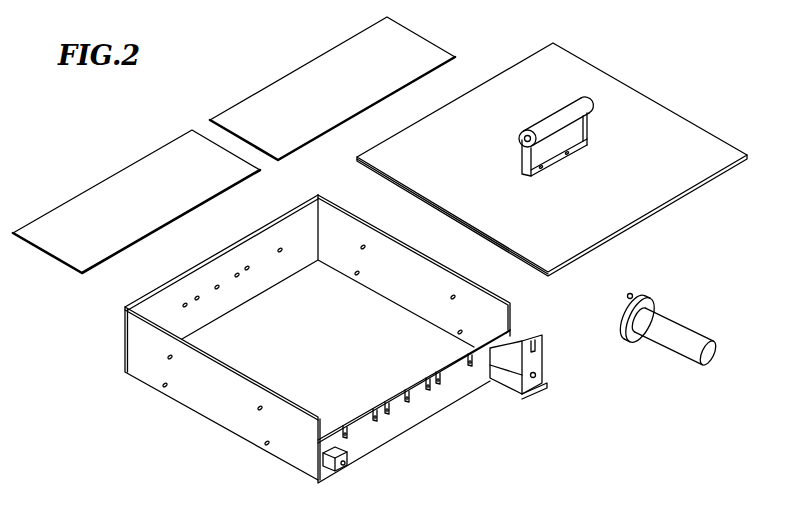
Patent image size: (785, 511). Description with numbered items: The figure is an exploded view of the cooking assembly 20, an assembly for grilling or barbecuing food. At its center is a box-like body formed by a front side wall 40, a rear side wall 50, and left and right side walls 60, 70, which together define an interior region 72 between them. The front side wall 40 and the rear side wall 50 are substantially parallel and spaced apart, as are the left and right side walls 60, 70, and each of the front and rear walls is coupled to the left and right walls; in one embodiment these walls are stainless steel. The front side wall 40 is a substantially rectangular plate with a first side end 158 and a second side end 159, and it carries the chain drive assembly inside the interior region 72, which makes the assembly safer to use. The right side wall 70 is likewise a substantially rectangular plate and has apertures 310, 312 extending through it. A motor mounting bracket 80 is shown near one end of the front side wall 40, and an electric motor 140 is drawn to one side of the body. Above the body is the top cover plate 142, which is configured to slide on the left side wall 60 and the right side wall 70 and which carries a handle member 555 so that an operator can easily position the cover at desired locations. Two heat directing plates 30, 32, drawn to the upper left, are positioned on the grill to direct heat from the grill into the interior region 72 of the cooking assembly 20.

The cooking assembly 20 is at (606, 47).
The heat directing plate 30 is at (117, 205).
The heat directing plate 32 is at (303, 88).
The top cover plate 142 is at (650, 128).
The handle member 555 is at (553, 123).
The front side wall 40 is at (415, 408).
The rear side wall 50 is at (247, 287).
The left side wall 60 is at (232, 413).
The right side wall 70 is at (427, 310).
The interior region 72 is at (333, 362).
The aperture 310 is at (365, 249).
The aperture 312 is at (359, 275).
The first side end 158 is at (510, 338).
The second side end 159 is at (322, 467).
The motor mounting bracket 80 is at (537, 360).
The electric motor 140 is at (680, 335).